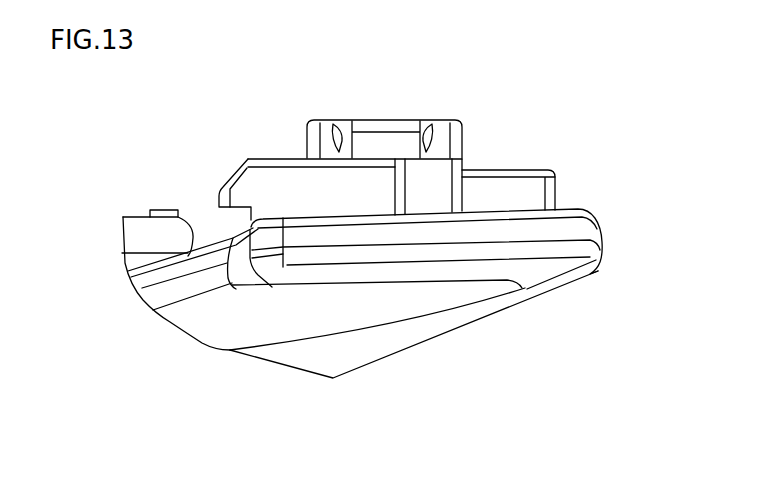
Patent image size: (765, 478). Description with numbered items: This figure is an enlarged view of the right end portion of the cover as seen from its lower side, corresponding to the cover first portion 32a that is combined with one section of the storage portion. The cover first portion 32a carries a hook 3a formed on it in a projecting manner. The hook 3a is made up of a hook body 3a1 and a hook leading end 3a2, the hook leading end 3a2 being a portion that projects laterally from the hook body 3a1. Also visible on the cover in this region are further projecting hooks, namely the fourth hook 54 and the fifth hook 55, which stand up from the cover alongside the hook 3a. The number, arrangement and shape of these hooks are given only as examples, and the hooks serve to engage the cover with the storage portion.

The hook 3a is at (159, 124).
The hook body 3a1 is at (293, 195).
The hook leading end 3a2 is at (232, 183).
The fifth hook 55 is at (380, 119).
The fourth hook 54 is at (498, 169).
The cover first portion 32a is at (387, 307).